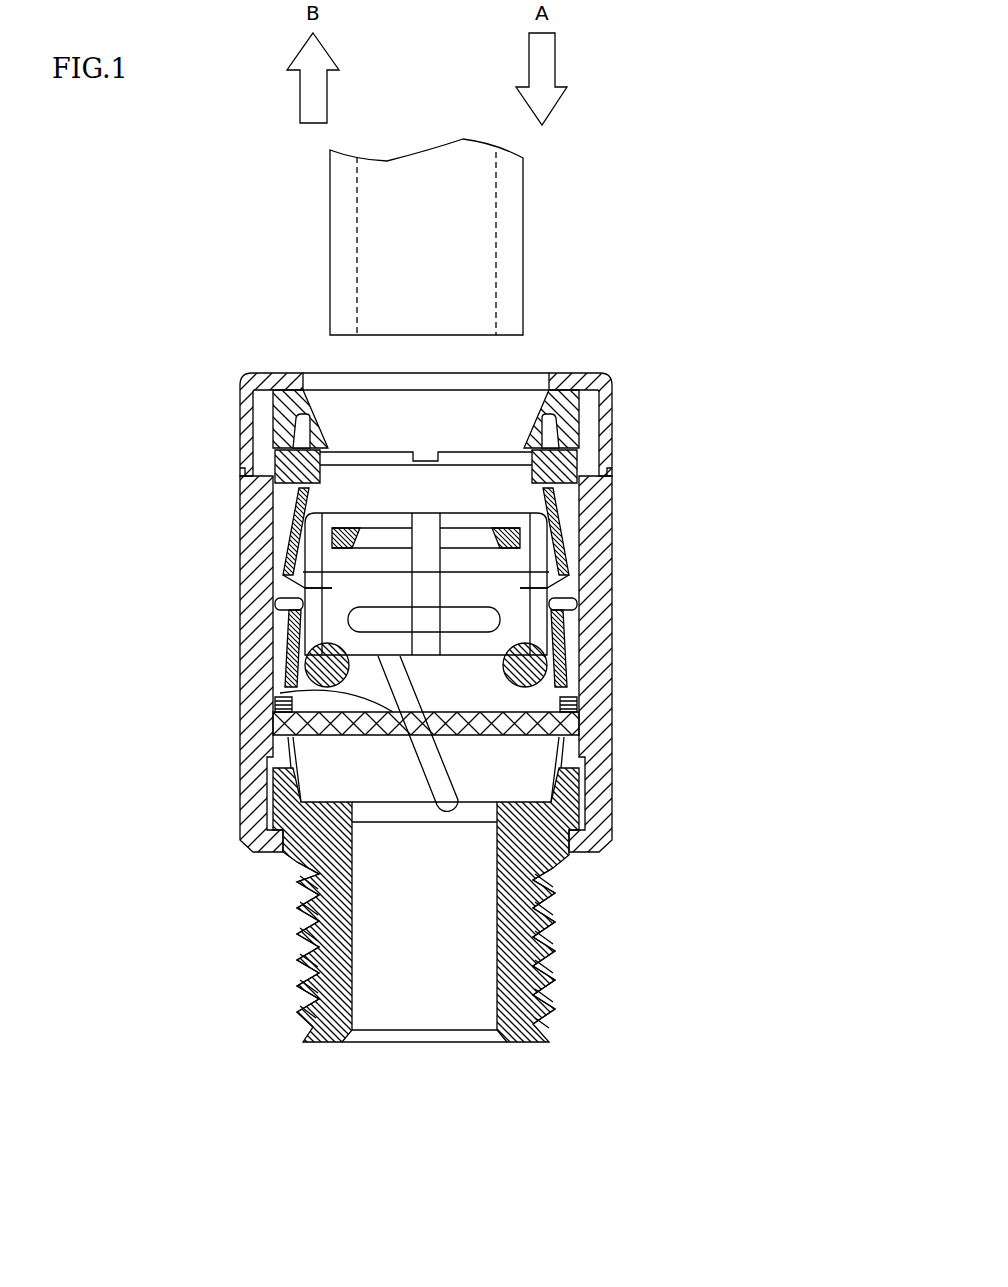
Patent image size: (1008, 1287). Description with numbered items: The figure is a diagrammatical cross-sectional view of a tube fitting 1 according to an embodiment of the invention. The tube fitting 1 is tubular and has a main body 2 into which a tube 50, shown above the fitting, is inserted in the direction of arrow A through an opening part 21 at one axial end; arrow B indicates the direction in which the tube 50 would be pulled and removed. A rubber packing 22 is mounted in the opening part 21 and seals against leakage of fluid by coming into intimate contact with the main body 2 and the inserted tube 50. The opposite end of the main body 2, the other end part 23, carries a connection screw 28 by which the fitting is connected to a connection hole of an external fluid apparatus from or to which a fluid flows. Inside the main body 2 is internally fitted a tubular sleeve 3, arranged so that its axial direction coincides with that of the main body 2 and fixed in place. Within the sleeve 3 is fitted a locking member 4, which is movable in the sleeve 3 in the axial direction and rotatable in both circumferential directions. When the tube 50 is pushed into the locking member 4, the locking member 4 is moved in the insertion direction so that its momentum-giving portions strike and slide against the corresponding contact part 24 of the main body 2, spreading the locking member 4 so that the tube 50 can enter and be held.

The tube fitting 1 is at (627, 247).
The main body 2 is at (600, 547).
The sleeve 3 is at (565, 475).
The locking member 4 is at (500, 567).
The opening part 21 is at (540, 370).
The rubber packing 22 is at (283, 390).
The other end part 23 is at (555, 1060).
The contact part 24 is at (487, 790).
The connection screw 28 is at (570, 943).
The tube 50 is at (380, 287).